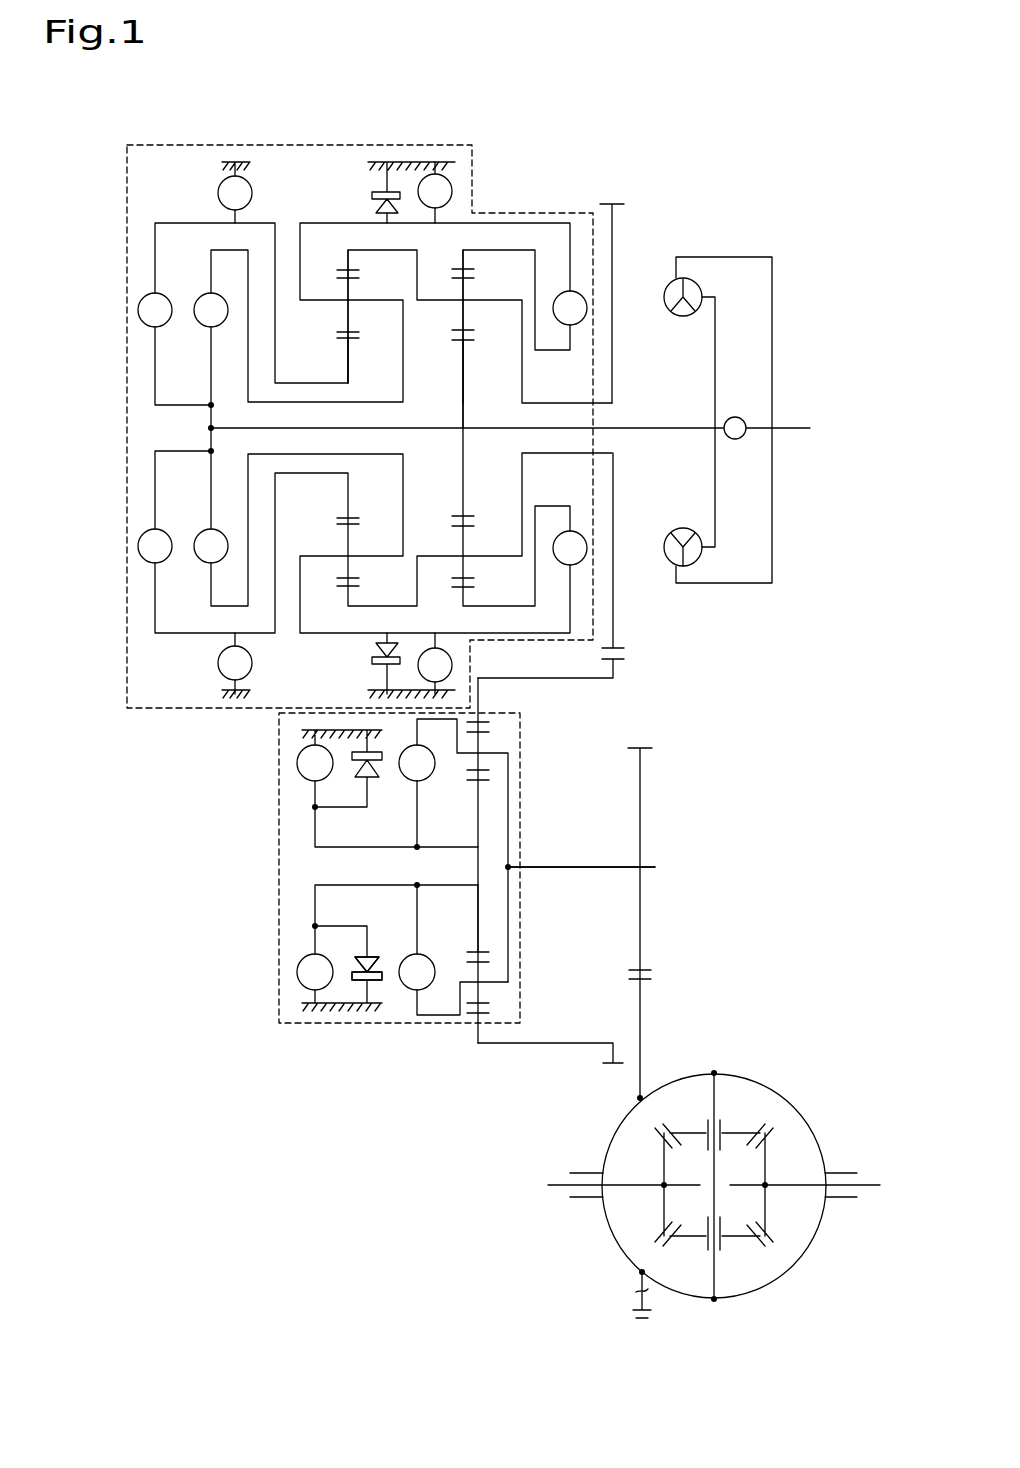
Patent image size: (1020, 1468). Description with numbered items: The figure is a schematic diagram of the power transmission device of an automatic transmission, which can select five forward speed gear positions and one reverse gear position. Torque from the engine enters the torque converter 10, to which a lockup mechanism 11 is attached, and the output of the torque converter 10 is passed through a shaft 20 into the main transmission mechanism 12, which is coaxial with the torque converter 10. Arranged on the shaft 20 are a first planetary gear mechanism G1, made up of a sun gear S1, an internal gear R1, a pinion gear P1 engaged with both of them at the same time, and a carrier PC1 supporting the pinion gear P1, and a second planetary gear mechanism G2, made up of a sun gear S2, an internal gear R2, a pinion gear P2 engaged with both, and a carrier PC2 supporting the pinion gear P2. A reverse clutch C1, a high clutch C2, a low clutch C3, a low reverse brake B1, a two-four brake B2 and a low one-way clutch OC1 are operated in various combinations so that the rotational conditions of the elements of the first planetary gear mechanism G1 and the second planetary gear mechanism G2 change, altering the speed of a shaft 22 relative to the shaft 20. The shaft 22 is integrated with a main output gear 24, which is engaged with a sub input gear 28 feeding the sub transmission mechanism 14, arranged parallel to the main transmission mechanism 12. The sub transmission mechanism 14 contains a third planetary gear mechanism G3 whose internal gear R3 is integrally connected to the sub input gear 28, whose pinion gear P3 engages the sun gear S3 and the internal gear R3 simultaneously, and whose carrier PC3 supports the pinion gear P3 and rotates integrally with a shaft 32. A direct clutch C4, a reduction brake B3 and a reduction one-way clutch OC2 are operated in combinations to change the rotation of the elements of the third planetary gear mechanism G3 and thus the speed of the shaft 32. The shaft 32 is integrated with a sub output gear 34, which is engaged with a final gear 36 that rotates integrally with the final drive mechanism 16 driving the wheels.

The torque converter 10 is at (736, 257).
The lockup mechanism 11 is at (735, 416).
The main transmission mechanism 12 is at (190, 145).
The sub transmission mechanism 14 is at (388, 1025).
The final drive mechanism 16 is at (770, 1085).
The shaft 20 is at (647, 426).
The shaft 22 is at (541, 403).
The main output gear 24 is at (648, 628).
The sub input gear 28 is at (620, 665).
The shaft 32 is at (567, 865).
The sub output gear 34 is at (652, 970).
The final gear 36 is at (648, 985).
The low reverse brake B1 is at (450, 180).
The 2–4 brake B2 is at (218, 190).
The reduction brake B3 is at (297, 971).
The reverse clutch C1 is at (160, 292).
The high clutch C2 is at (205, 328).
The low clutch C3 is at (582, 330).
The direct clutch C4 is at (405, 955).
The low one-way clutch OC1 is at (372, 194).
The reduction one-way clutch OC2 is at (350, 975).
The first planetary gear mechanism G1 is at (340, 284).
The second planetary gear mechanism G2 is at (467, 296).
The third planetary gear mechanism G3 is at (524, 893).
The internal gear R1 is at (354, 270).
The internal gear R2 is at (463, 263).
The internal gear R3 is at (495, 1018).
The pinion gear P1 is at (339, 315).
The pinion gear P2 is at (460, 318).
The pinion gear P3 is at (490, 967).
The sun gear S1 is at (345, 355).
The sun gear S2 is at (462, 350).
The sun gear S3 is at (478, 935).
The carrier PC1 is at (355, 325).
The carrier PC2 is at (473, 300).
The carrier PC3 is at (493, 984).